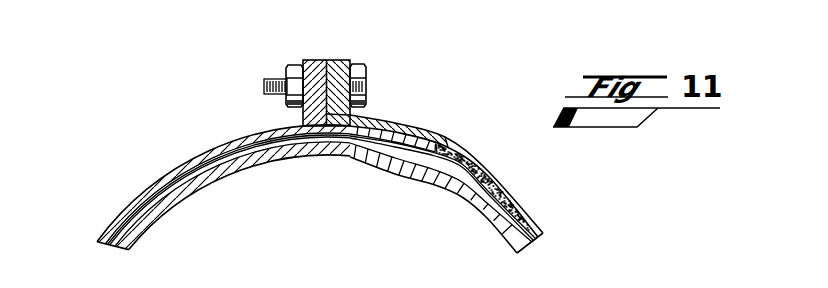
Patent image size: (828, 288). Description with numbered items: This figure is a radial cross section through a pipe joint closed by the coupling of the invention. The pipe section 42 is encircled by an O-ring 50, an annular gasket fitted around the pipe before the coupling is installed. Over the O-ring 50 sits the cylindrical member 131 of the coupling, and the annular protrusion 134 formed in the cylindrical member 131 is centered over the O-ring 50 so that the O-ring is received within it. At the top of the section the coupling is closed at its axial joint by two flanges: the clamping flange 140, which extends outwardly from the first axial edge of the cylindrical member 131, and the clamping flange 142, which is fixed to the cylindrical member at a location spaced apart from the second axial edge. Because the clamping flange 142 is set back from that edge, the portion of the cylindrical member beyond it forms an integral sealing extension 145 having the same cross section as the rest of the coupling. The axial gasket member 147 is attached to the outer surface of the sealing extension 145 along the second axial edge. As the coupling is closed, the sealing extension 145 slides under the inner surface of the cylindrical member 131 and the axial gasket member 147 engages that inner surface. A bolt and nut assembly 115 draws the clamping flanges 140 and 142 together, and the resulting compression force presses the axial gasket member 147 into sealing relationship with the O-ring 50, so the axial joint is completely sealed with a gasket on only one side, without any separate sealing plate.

The pipe section 42 is at (295, 158).
The O-ring 50 is at (493, 200).
The bolt and nut assembly 115 is at (368, 80).
The cylindrical member 131 is at (433, 126).
The annular protrusion 134 is at (200, 155).
The clamping flange 140 is at (335, 59).
The clamping flange 142 is at (311, 59).
The sealing extension 145 is at (347, 138).
The axial gasket member 147 is at (472, 170).